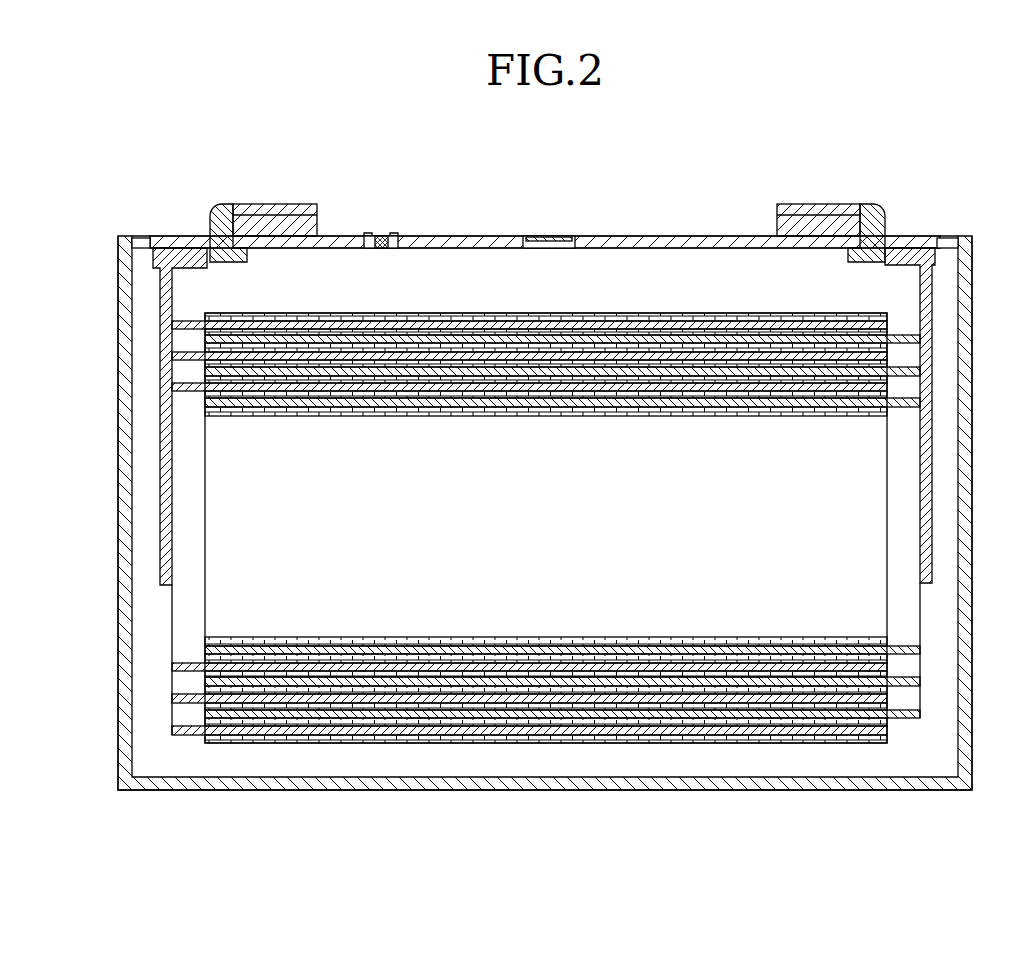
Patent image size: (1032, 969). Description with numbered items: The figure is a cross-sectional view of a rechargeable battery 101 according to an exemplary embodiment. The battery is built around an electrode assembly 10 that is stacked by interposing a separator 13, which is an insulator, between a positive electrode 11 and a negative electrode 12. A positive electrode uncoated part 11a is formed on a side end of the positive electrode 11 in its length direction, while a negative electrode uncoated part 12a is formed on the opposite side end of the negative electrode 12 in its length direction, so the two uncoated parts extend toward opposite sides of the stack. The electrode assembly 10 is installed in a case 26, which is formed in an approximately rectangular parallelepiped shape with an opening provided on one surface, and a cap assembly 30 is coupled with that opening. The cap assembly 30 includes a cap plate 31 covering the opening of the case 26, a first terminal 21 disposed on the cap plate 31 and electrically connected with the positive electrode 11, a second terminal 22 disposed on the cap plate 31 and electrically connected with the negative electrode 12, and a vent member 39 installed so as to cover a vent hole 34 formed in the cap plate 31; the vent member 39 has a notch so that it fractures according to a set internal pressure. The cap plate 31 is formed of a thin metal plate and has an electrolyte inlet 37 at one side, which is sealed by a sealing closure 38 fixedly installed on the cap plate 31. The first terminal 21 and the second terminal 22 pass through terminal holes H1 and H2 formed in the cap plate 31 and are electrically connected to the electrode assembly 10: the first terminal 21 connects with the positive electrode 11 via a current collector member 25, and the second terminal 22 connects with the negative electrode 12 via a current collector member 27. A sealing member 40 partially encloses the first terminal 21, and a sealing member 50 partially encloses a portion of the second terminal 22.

The rechargeable battery 101 is at (645, 132).
The electrode assembly 10 is at (690, 597).
The positive electrode 11 is at (326, 735).
The positive electrode uncoated part 11a is at (182, 735).
The negative electrode 12 is at (392, 716).
The negative electrode uncoated part 12a is at (902, 716).
The separator 13 is at (548, 705).
The first terminal 21 is at (272, 204).
The second terminal 22 is at (807, 204).
The current collector member 25 is at (160, 485).
The case 26 is at (968, 430).
The current collector member 27 is at (932, 505).
The cap assembly 30 is at (467, 240).
The cap plate 31 is at (617, 236).
The vent hole 34 is at (545, 249).
The electrolyte inlet 37 is at (386, 236).
The sealing closure 38 is at (378, 236).
The vent member 39 is at (560, 236).
The sealing member 40 is at (227, 210).
The sealing member 50 is at (856, 220).
The terminal hole H1 is at (162, 234).
The terminal hole H2 is at (928, 236).